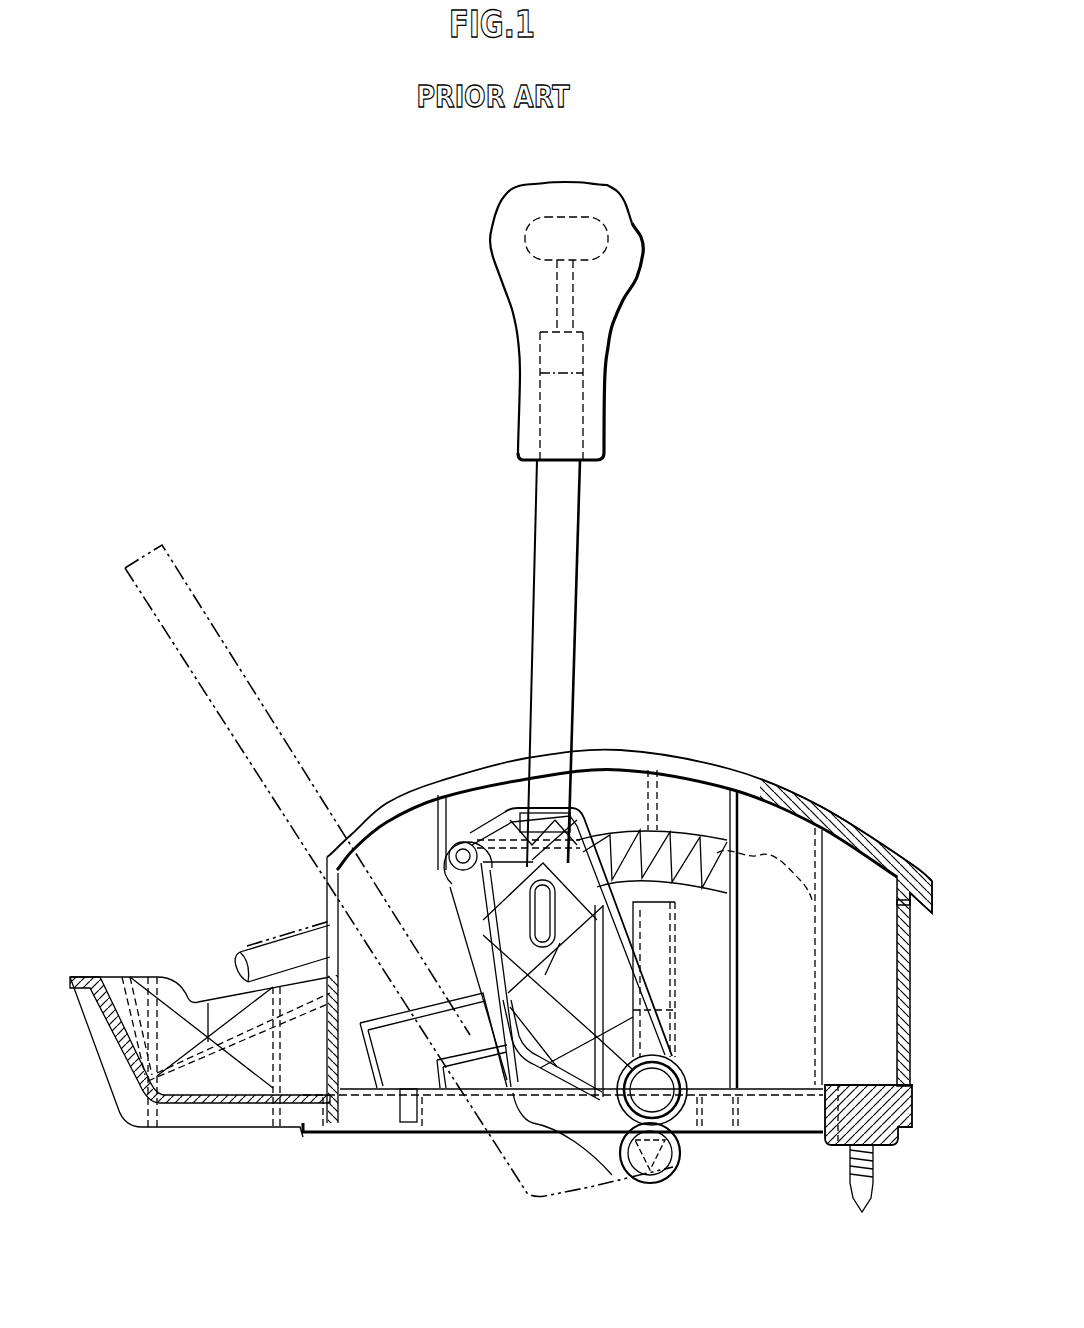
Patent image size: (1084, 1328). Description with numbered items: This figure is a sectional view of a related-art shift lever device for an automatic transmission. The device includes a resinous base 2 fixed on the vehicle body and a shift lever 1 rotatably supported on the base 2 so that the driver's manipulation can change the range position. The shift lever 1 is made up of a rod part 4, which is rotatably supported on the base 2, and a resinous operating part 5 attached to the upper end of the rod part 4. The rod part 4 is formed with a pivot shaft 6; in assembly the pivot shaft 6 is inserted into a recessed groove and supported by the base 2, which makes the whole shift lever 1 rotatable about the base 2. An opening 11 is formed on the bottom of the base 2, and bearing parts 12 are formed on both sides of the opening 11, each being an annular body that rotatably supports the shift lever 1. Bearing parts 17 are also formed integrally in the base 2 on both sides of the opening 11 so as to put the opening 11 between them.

The shift lever 1 is at (657, 361).
The base 2 is at (832, 805).
The rod part 4 is at (565, 572).
The operating part 5 is at (527, 367).
The pivot shaft 6 is at (675, 1157).
The opening 11 is at (775, 1120).
The bearing part 12 is at (687, 1070).
The bearing part 17 is at (612, 1175).